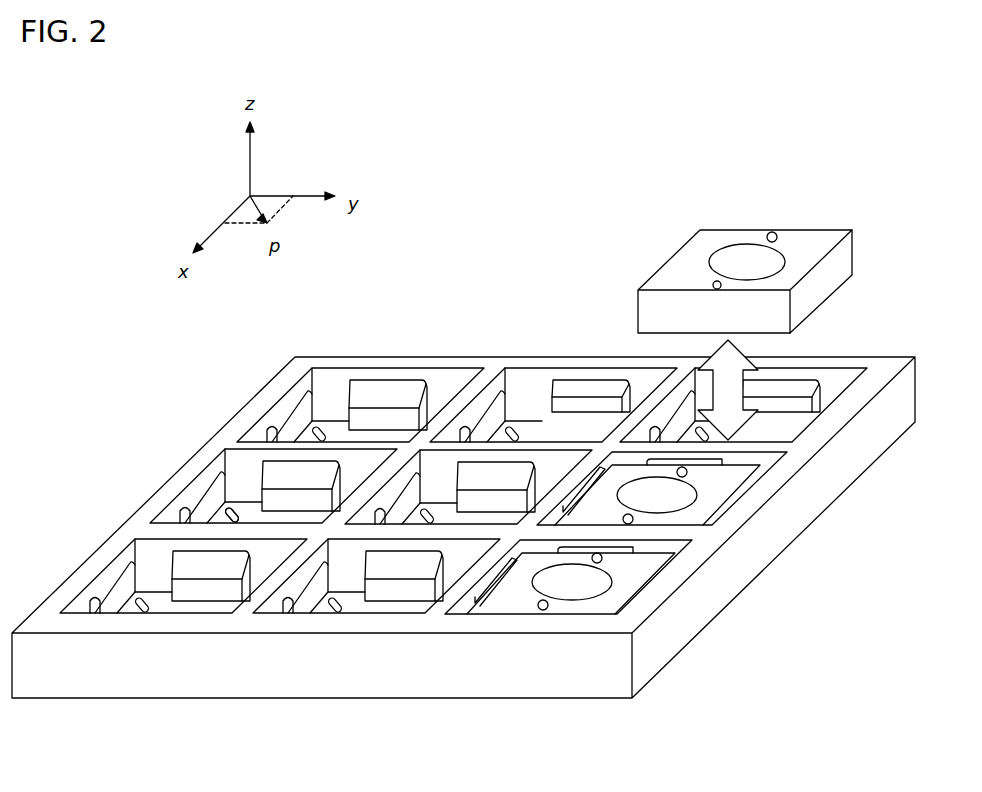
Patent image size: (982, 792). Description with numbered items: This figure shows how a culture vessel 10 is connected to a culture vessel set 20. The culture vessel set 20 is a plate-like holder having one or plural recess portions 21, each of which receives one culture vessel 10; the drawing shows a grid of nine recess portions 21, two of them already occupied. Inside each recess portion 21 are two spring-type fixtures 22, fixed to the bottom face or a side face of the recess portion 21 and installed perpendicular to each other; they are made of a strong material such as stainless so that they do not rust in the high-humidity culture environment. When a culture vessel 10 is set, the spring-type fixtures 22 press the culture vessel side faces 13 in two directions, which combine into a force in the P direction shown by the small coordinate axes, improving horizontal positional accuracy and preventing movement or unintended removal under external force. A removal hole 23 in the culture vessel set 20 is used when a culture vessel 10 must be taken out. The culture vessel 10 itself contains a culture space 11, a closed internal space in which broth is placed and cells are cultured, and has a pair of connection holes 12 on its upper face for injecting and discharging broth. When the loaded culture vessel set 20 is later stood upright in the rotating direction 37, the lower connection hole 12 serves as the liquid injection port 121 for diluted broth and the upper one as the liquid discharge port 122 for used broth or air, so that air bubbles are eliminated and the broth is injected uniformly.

The culture vessel 10 is at (771, 245).
The culture space 11 is at (744, 245).
The connection hole 12 is at (777, 234).
The culture vessel side face 13 is at (833, 273).
The culture vessel set 20 is at (143, 500).
The recess portion 21 is at (322, 383).
The spring-type fixture 22 is at (393, 380).
The removal hole 23 is at (222, 507).
The rotating direction 37 is at (605, 335).
The liquid injection port 121 is at (548, 610).
The liquid discharge port 122 is at (603, 557).